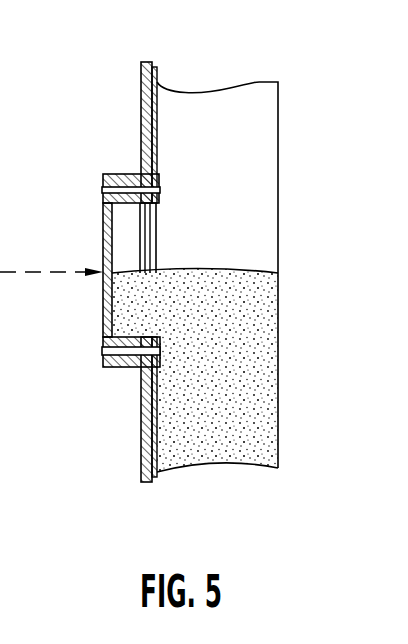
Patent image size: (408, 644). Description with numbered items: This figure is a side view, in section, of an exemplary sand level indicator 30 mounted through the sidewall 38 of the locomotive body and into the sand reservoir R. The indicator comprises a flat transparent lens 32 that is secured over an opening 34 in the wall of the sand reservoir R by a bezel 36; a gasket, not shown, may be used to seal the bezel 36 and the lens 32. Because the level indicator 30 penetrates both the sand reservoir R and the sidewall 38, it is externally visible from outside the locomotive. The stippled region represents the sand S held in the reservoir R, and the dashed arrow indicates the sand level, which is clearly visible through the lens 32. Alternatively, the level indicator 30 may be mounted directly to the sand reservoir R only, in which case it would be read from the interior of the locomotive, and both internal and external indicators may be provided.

The level indicator 30 is at (91, 187).
The flat transparent lens 32 is at (110, 303).
The opening 34 is at (159, 205).
The bezel 36 is at (113, 367).
The sidewall 38 is at (141, 103).
The sand reservoir R is at (158, 120).
The sand S is at (217, 363).